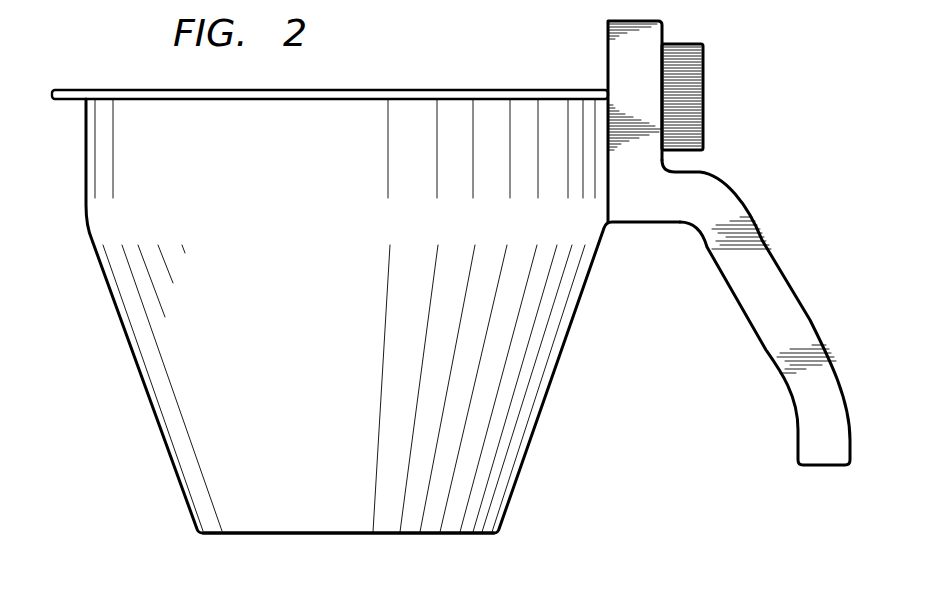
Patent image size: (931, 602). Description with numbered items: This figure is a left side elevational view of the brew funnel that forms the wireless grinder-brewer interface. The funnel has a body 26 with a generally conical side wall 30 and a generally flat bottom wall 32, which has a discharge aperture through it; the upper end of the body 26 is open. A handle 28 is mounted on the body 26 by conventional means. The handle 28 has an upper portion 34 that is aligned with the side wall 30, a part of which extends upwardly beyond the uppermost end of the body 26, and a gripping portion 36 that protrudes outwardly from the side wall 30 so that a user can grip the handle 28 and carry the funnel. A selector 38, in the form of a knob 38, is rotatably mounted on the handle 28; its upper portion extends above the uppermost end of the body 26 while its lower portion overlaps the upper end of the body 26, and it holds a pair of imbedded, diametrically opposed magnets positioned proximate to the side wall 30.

The body 26 is at (556, 390).
The handle 28 is at (810, 315).
The side wall 30 is at (490, 437).
The bottom wall 32 is at (470, 540).
The upper portion 34 is at (623, 68).
The gripping portion 36 is at (760, 265).
The selector 38 is at (697, 100).